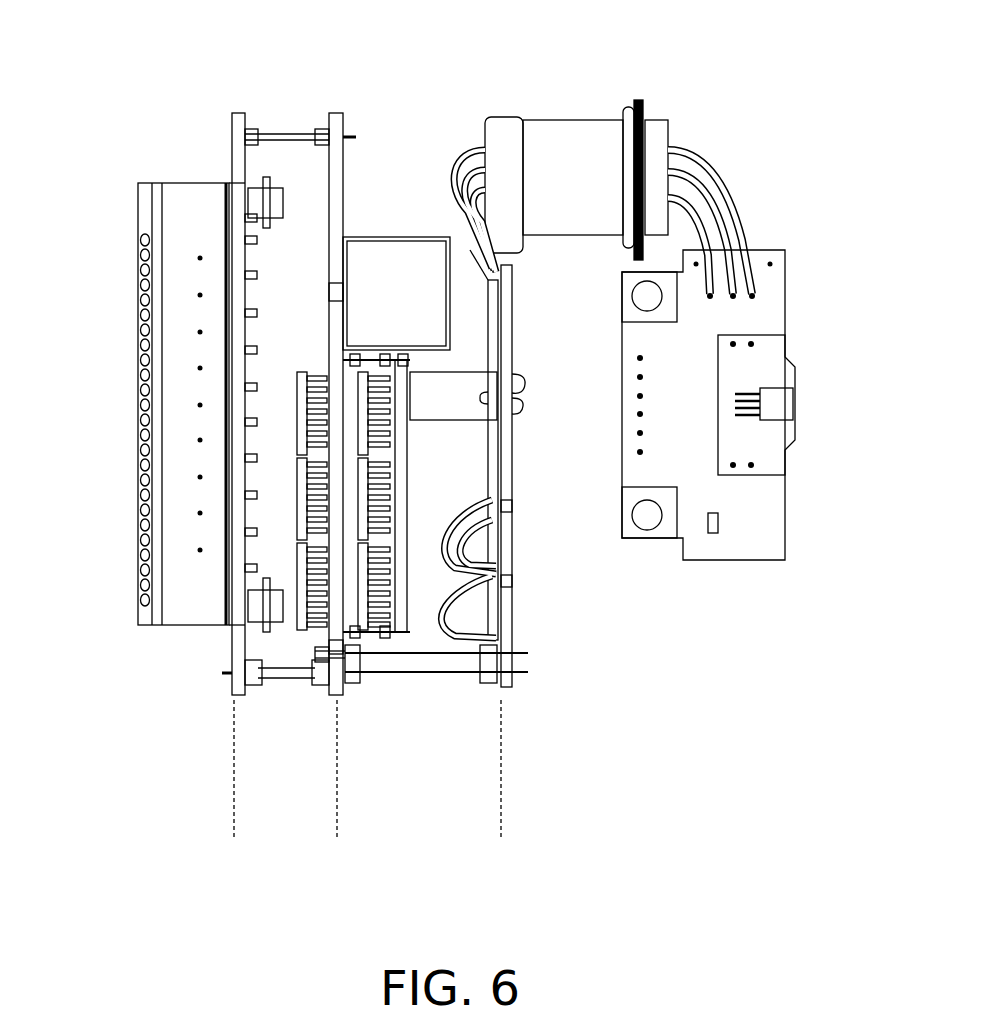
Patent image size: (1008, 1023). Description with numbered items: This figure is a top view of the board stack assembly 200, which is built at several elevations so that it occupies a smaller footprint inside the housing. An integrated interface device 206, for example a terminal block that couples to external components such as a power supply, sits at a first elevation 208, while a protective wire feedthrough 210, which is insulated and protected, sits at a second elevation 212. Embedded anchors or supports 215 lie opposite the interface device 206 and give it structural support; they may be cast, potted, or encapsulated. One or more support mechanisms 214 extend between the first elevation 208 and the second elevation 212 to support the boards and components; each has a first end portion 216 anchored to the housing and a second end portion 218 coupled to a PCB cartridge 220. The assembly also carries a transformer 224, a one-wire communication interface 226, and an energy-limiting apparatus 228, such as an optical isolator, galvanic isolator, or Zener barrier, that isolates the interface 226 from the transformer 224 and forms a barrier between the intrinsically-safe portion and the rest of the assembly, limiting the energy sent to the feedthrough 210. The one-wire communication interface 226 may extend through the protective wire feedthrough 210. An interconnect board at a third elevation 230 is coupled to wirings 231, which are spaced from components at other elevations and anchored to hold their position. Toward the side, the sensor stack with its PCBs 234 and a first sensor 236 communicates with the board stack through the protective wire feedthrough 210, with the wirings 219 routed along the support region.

The board stack assembly 200 is at (762, 810).
The integrated interface device 206 is at (140, 608).
The first elevation 208 is at (182, 706).
The protective wire feedthrough 210 is at (625, 95).
The second elevation 212 is at (572, 28).
The support mechanism 214 is at (462, 372).
The embedded anchors or supports 215 is at (268, 196).
The first end portion 216 is at (521, 423).
The second end portion 218 is at (412, 418).
The wires 219 is at (500, 540).
The PCB cartridge 220 is at (395, 655).
The transformer 224 is at (402, 237).
The one-wire communication interface 226 is at (373, 670).
The energy-limiting apparatus 228 is at (317, 368).
The third elevation 230 is at (350, 850).
The wirings 231 is at (463, 150).
The printed circuit boards 234 is at (770, 552).
The first sensor 236 is at (800, 410).